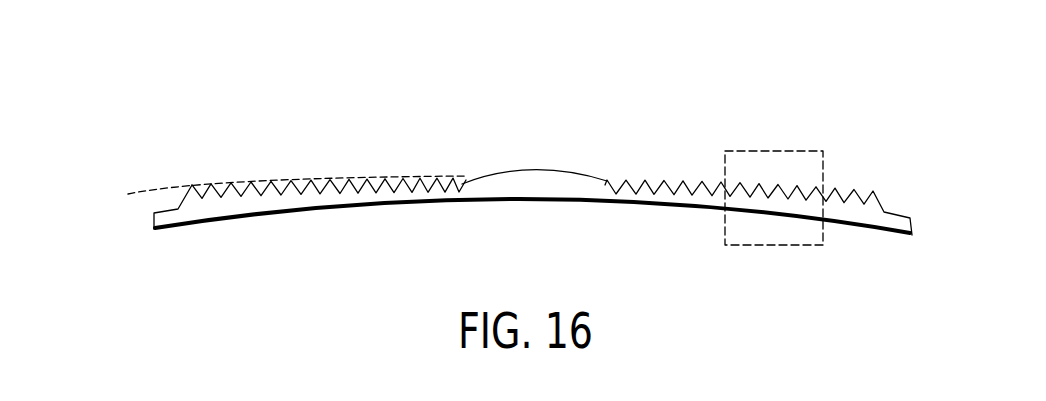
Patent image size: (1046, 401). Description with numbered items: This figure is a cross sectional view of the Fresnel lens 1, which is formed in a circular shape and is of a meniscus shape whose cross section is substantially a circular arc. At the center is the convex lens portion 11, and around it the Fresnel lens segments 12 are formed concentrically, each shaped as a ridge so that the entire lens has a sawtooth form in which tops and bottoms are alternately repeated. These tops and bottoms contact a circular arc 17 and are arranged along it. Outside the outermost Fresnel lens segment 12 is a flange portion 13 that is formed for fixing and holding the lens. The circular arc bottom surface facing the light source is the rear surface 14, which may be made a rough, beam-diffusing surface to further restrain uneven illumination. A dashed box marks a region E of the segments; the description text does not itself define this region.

The Fresnel lens 1 is at (319, 102).
The convex lens portion 11 is at (523, 170).
The Fresnel lens segments 12 is at (653, 181).
The flange portion 13 is at (153, 216).
The rear surface 14 is at (457, 203).
The circular arc 17 is at (242, 178).
The enlarged region E is at (773, 151).